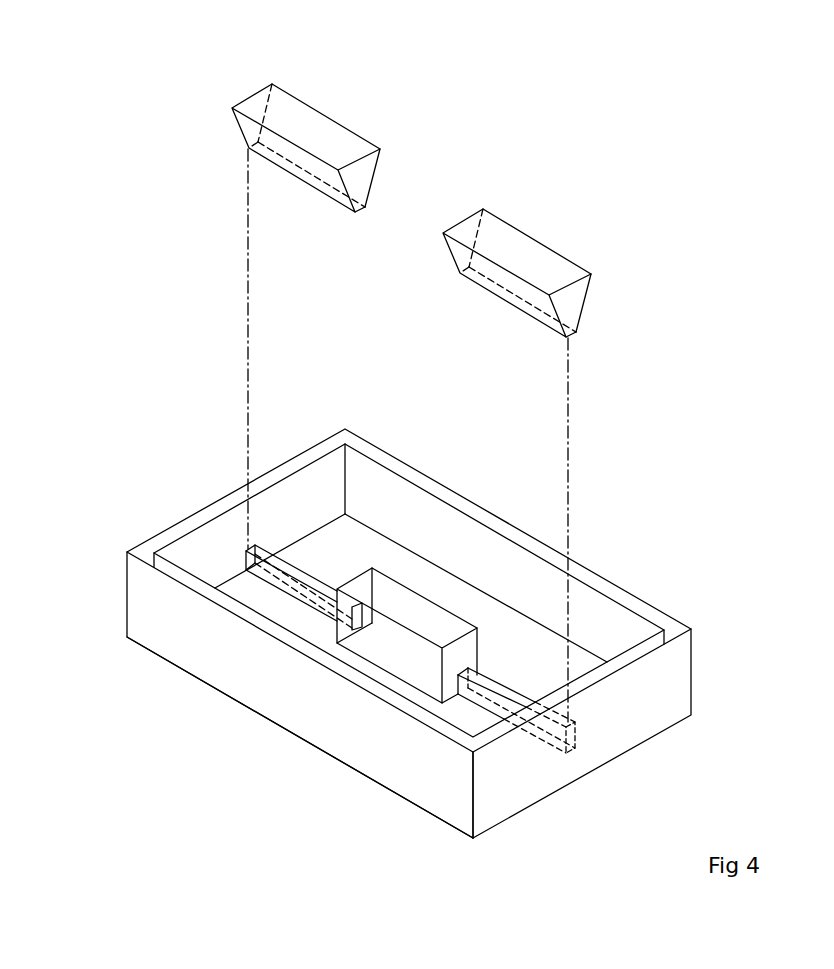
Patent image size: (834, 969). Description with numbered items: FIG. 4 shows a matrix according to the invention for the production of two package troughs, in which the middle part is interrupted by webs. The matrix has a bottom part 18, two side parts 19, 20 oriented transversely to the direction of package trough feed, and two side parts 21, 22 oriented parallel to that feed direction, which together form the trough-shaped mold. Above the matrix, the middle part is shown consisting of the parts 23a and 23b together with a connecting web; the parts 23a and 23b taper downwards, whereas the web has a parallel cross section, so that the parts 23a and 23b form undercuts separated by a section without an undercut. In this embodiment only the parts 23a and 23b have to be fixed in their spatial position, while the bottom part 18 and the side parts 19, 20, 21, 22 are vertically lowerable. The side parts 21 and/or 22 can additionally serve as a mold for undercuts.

The bottom part 18 is at (318, 655).
The side part 19 is at (323, 492).
The side part 20 is at (642, 703).
The side part 21 is at (470, 558).
The side part 22 is at (362, 727).
The part of middle part 23a is at (325, 139).
The part of middle part 23b is at (525, 245).